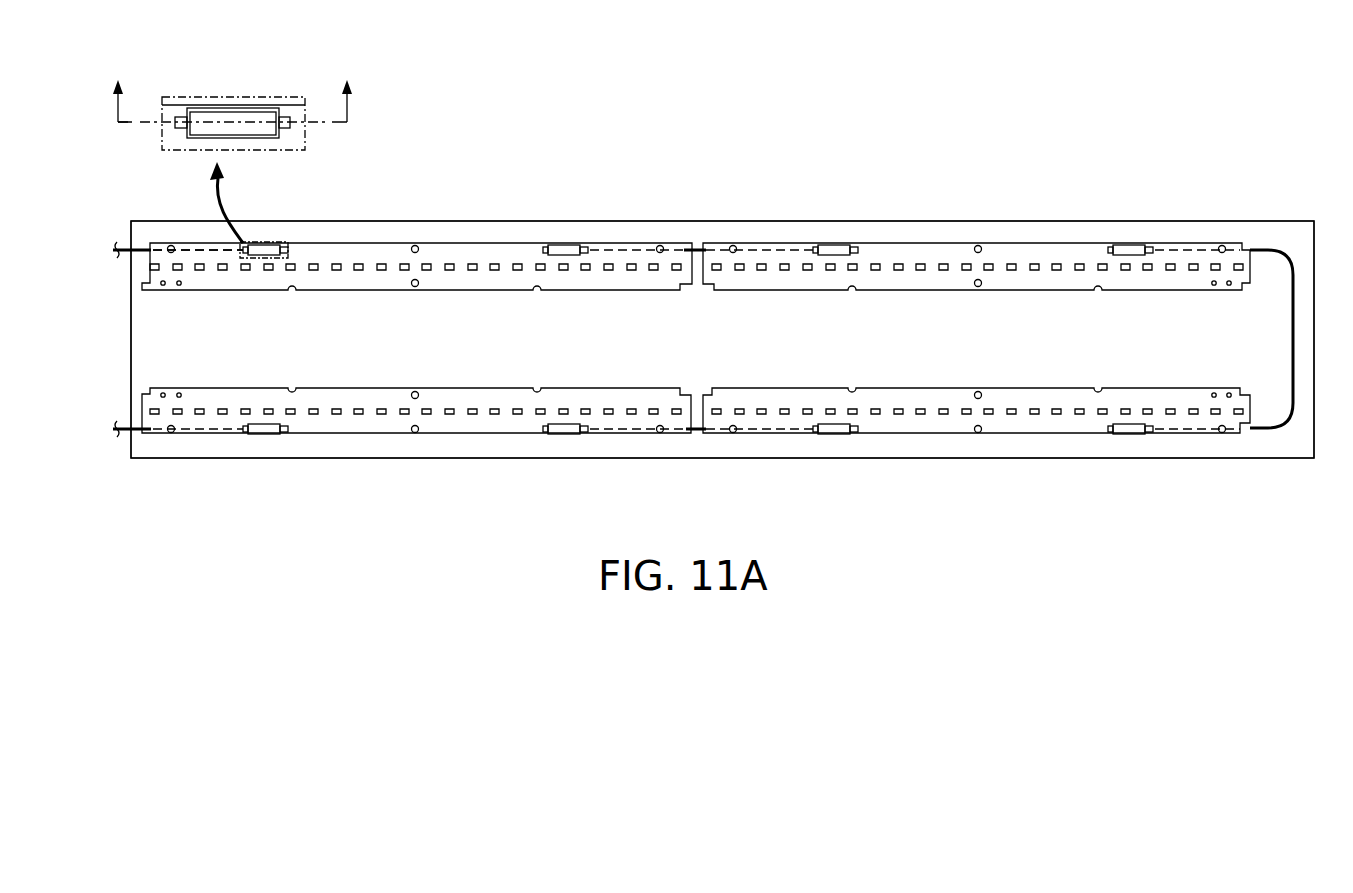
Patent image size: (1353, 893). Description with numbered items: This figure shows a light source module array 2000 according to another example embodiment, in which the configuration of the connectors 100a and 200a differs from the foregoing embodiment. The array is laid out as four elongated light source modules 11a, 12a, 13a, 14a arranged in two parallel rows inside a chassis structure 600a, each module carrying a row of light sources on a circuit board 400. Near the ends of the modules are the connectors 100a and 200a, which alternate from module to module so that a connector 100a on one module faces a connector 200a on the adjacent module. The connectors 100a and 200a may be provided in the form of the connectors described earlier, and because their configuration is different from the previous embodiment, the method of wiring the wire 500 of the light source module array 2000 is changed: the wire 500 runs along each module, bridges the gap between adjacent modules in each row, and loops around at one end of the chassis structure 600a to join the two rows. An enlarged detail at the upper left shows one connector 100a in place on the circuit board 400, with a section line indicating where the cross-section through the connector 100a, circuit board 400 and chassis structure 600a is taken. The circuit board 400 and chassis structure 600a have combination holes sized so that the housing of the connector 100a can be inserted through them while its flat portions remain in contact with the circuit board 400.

The light source module array 2000 is at (1001, 210).
The chassis structure 600a is at (468, 233).
The first light source module 11a is at (329, 240).
The second light source module 12a is at (891, 240).
The third light source module 13a is at (891, 438).
The fourth light source module 14a is at (329, 438).
The circuit board 400 is at (387, 255).
The connector 100a is at (238, 100).
The connector 200a is at (568, 245).
The wire 500 is at (698, 248).